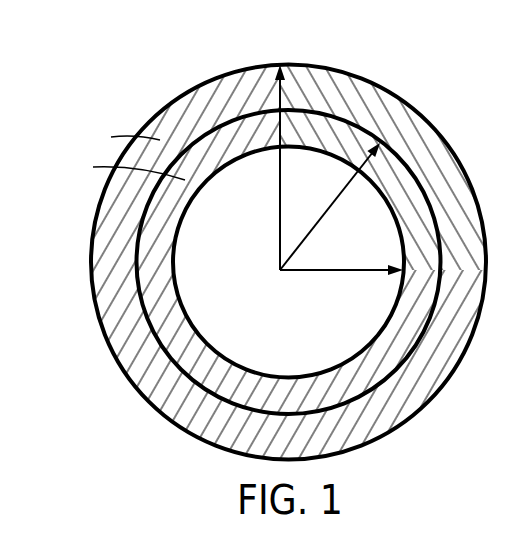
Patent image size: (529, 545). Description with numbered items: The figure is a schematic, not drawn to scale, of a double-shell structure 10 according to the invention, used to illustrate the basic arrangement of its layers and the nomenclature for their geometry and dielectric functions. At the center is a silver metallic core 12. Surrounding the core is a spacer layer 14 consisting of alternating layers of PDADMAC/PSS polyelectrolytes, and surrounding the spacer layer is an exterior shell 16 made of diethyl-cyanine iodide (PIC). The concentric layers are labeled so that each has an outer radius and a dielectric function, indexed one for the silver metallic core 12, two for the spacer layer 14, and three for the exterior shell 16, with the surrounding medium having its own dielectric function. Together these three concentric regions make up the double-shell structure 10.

The double-shell structure 10 is at (381, 75).
The silver metallic core 12 is at (208, 295).
The spacer layer 14 is at (158, 243).
The exterior shell 16 is at (190, 418).